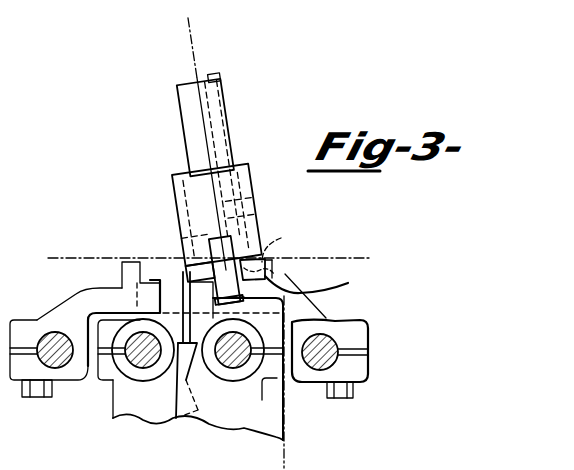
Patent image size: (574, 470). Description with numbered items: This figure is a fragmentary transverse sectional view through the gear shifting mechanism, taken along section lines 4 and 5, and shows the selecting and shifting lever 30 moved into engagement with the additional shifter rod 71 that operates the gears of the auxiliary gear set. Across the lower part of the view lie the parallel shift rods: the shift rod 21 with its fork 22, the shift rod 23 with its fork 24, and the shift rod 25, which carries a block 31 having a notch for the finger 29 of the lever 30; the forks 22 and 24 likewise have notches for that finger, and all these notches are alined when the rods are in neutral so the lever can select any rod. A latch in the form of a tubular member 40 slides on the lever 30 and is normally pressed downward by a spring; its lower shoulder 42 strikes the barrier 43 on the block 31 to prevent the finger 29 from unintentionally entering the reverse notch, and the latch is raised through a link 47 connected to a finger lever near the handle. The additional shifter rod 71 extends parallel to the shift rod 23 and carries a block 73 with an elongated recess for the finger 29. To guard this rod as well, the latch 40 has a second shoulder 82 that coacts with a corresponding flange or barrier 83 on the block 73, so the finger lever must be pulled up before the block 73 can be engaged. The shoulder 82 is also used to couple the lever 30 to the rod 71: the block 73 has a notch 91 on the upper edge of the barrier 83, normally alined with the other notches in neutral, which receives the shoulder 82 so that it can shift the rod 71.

The section line 4- 4 is at (184, 43).
The section line 5- 5 is at (65, 250).
The shift rod 21 is at (136, 362).
The fork 22 is at (132, 410).
The shift rod 23 is at (236, 357).
The fork 24 is at (184, 416).
The shift rod 25 is at (61, 368).
The finger 29 is at (181, 291).
The selecting and shifting lever 30 is at (180, 109).
The block 31 is at (82, 296).
The tubular member 40 is at (180, 186).
The shoulder 42 is at (182, 276).
The barrier 43 is at (118, 262).
The link 47 is at (220, 78).
The additional shifter rod 71 is at (332, 339).
The block 73 is at (326, 319).
The shoulder 82 is at (284, 240).
The barrier 83 is at (337, 285).
The notch 91 is at (286, 272).